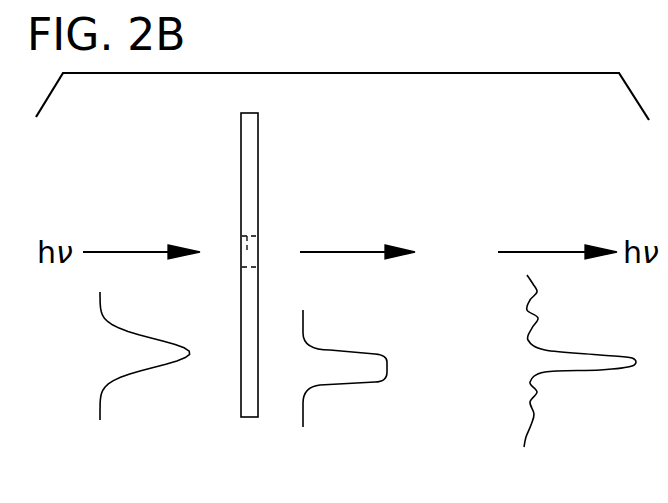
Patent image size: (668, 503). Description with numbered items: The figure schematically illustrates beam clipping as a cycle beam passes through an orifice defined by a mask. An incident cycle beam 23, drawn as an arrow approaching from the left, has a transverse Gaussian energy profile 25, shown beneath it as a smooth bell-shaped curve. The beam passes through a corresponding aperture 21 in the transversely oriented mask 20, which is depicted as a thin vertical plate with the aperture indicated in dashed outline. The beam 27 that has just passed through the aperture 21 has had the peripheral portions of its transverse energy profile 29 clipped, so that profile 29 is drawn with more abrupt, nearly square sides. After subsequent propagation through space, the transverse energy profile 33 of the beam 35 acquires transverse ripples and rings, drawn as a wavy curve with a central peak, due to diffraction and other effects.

The mask 20 is at (258, 132).
The aperture 21 is at (250, 250).
The incident cycle beam 23 is at (118, 252).
The transverse Gaussian energy profile 25 is at (133, 382).
The beam that has just passed through the aperture 27 is at (351, 252).
The transverse energy profile 29 is at (348, 385).
The transverse energy profile 33 is at (551, 252).
The beam 35 is at (540, 410).